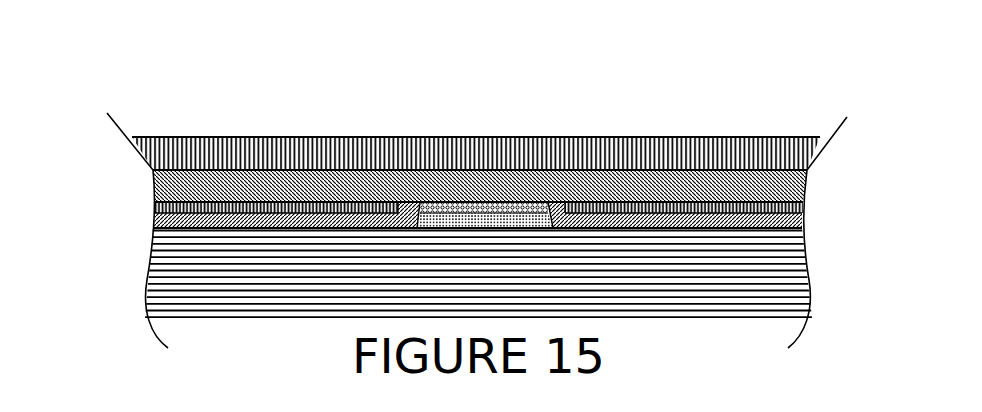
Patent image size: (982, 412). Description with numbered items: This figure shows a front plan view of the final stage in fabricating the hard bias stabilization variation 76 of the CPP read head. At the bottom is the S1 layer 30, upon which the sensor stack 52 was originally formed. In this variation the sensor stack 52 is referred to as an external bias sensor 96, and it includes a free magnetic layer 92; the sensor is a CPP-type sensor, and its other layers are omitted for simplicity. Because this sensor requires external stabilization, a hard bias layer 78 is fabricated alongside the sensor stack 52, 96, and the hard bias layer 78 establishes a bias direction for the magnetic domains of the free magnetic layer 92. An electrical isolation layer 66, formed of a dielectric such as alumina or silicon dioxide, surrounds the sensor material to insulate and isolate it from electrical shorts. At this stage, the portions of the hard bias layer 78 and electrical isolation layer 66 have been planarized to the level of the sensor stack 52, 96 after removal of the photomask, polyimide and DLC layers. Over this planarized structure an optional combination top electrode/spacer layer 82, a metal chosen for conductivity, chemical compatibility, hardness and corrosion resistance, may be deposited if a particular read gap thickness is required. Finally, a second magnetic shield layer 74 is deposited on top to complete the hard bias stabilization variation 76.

The hard bias stabilization variation 76 is at (467, 181).
The second magnetic shield layer 74 is at (325, 137).
The hard bias layer 78 is at (252, 200).
The electrical isolation layer 66 is at (417, 202).
The sensor stack 52 is at (448, 135).
The external bias sensor 96 is at (438, 184).
The free magnetic layer 92 is at (485, 202).
The combination top electrode/spacer layer 82 is at (613, 182).
The S1 layer 30 is at (797, 267).